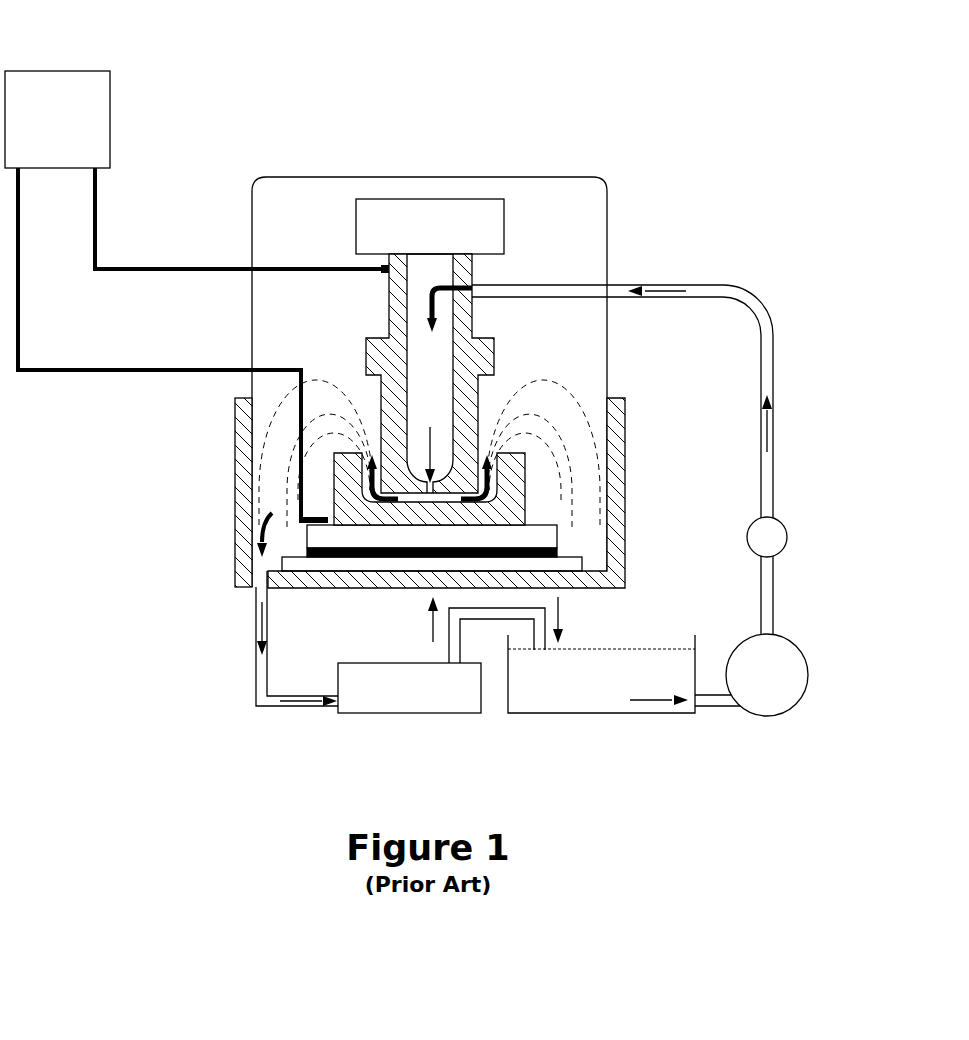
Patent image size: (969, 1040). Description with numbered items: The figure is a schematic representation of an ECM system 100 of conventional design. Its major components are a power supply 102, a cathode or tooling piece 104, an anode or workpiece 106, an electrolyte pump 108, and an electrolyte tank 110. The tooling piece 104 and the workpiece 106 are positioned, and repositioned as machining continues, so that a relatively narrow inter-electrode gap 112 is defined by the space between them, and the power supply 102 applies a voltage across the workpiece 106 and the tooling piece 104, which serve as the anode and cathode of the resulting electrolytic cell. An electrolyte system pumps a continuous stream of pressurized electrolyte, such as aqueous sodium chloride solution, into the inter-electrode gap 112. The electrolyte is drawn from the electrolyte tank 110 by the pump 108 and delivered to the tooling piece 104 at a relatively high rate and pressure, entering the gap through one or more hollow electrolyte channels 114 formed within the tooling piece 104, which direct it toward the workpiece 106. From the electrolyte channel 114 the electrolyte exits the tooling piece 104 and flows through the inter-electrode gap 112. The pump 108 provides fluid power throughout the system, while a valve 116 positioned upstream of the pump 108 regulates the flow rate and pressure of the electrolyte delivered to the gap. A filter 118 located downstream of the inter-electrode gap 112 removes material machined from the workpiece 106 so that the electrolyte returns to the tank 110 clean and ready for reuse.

The ECM system 100 is at (557, 135).
The power supply 102 is at (57, 71).
The tooling piece 104 is at (463, 392).
The workpiece 106 is at (349, 507).
The electrolyte pump 108 is at (802, 655).
The electrolyte tank 110 is at (602, 714).
The inter-electrode gap 112 is at (428, 497).
The electrolyte channels 114 is at (436, 358).
The valve 116 is at (782, 525).
The filter 118 is at (393, 714).